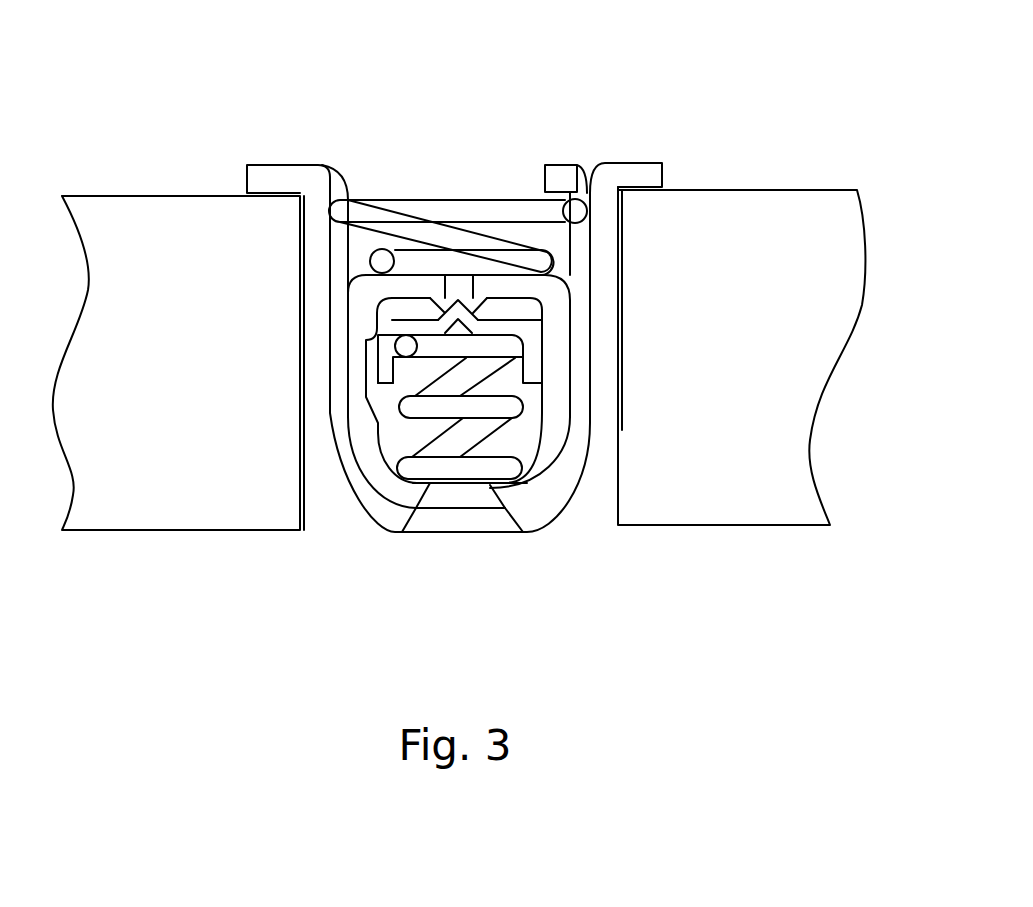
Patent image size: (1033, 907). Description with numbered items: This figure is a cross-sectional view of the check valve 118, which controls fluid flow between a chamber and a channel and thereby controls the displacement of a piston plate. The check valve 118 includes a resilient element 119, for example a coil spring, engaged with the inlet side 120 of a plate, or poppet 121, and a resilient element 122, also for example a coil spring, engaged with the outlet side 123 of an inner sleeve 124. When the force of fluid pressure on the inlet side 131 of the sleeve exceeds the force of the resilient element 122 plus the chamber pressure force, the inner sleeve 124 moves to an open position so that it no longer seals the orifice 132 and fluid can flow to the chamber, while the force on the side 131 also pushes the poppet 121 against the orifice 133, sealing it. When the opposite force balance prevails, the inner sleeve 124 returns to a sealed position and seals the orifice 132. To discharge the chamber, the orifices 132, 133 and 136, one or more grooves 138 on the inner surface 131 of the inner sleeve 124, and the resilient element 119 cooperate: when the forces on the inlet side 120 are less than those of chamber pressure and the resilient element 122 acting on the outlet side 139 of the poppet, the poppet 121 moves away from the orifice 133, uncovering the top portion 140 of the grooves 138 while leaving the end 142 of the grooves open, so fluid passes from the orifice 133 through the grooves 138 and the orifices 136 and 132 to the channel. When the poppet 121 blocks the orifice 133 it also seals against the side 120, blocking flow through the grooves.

The check valve 118 is at (640, 85).
The resilient element 119 is at (510, 440).
The inlet side 120 is at (395, 373).
The poppet 121 is at (378, 363).
The resilient element 122 is at (385, 193).
The outlet side 123 is at (358, 335).
The inner sleeve 124 is at (570, 352).
The inlet side 131 is at (530, 412).
The orifice 132 is at (473, 520).
The orifice 133 is at (462, 287).
The orifice 136 is at (455, 500).
The grooves 138 is at (365, 398).
The outlet side 139 is at (450, 303).
The top portion 140 is at (368, 355).
The end 142 is at (373, 488).